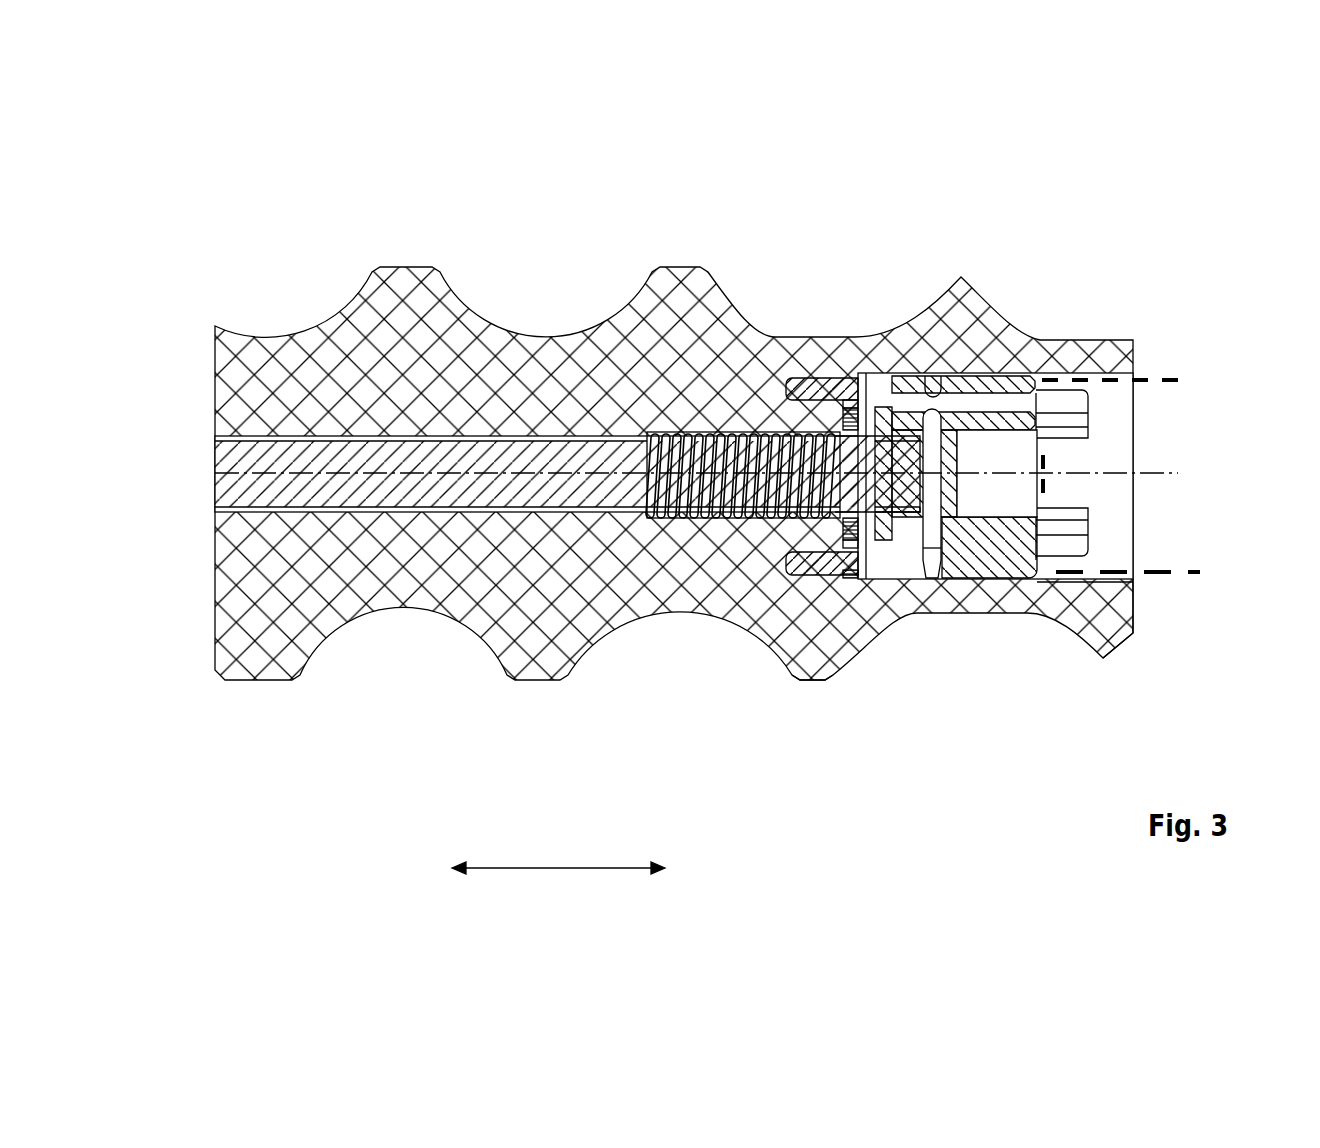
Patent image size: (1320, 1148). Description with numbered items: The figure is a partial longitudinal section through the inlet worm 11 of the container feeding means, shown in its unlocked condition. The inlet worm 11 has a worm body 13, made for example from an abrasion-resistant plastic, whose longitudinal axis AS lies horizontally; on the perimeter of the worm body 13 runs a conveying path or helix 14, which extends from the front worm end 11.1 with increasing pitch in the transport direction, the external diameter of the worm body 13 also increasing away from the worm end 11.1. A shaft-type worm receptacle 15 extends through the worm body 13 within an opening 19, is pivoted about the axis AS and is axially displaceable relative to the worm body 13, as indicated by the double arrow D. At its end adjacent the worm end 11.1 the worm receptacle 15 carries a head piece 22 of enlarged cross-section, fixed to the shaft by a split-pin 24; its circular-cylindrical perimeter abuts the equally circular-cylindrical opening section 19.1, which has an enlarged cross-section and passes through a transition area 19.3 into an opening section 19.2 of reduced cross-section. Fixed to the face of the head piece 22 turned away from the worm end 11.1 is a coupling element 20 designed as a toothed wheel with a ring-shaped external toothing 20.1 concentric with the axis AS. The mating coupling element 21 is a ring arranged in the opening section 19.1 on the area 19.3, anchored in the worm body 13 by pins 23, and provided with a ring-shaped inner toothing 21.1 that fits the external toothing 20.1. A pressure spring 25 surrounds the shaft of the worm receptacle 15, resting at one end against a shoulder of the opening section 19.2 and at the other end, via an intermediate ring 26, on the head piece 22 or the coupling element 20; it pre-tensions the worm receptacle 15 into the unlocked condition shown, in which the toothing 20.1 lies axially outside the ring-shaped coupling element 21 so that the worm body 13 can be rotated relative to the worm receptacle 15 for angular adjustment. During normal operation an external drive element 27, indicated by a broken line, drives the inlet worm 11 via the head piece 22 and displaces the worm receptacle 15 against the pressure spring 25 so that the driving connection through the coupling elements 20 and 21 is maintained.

The inlet worm 11 is at (708, 469).
The worm end 11.1 is at (1135, 607).
The worm body 13 is at (315, 375).
The conveying path or helix 14 is at (677, 630).
The worm receptacle 15 is at (323, 461).
The opening 19 is at (716, 479).
The opening section 19.1 is at (995, 361).
The opening section 19.2 is at (535, 626).
The area 19.3 is at (645, 435).
The coupling element 20 is at (987, 551).
The external toothing 20.1 is at (883, 390).
The coupling element 21 is at (853, 583).
The inner toothing 21.1 is at (860, 398).
The head piece 22 is at (995, 557).
The pins 23 is at (803, 557).
The split-pin 24 is at (935, 487).
The pressure spring 25 is at (703, 503).
The intermediate ring 26 is at (879, 520).
The drive element 27 is at (1148, 380).
The longitudinal axis AS is at (1130, 457).
The double arrow D is at (558, 895).